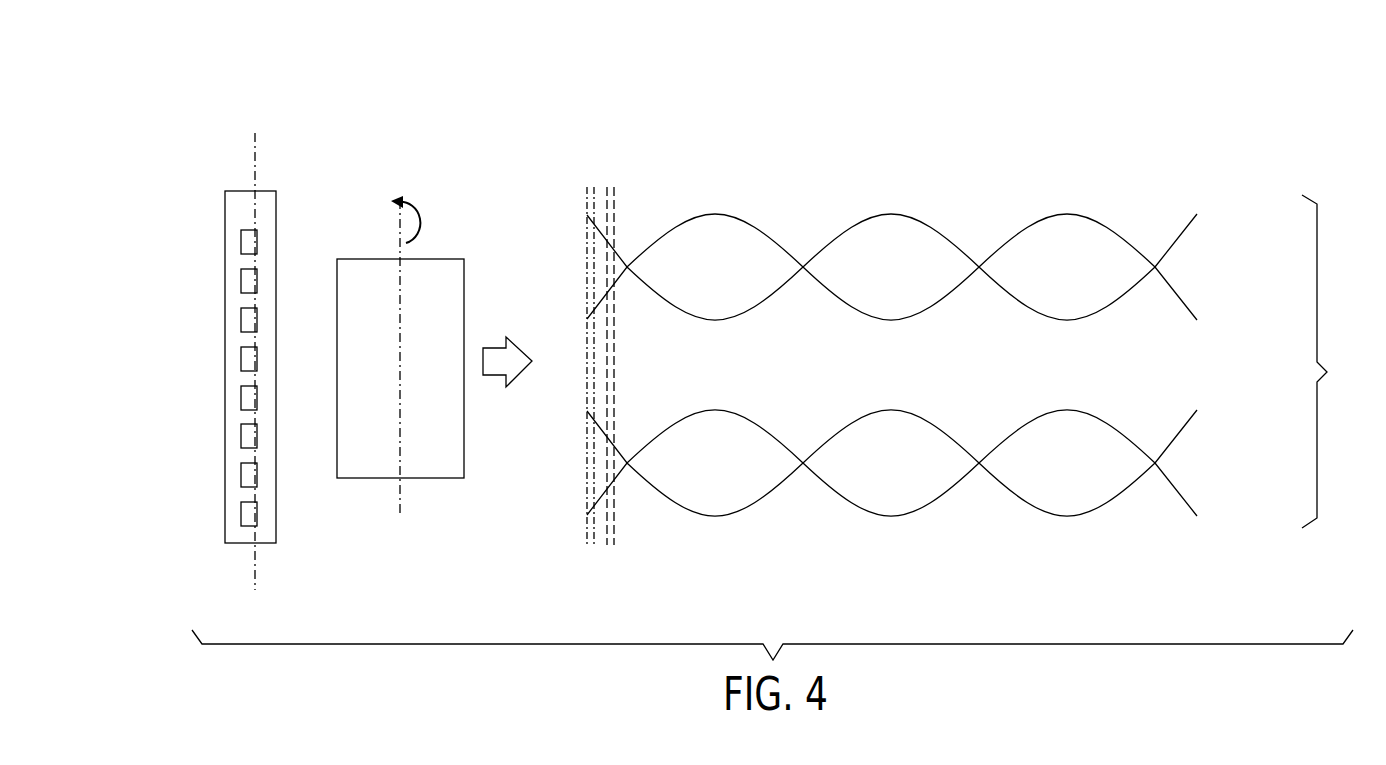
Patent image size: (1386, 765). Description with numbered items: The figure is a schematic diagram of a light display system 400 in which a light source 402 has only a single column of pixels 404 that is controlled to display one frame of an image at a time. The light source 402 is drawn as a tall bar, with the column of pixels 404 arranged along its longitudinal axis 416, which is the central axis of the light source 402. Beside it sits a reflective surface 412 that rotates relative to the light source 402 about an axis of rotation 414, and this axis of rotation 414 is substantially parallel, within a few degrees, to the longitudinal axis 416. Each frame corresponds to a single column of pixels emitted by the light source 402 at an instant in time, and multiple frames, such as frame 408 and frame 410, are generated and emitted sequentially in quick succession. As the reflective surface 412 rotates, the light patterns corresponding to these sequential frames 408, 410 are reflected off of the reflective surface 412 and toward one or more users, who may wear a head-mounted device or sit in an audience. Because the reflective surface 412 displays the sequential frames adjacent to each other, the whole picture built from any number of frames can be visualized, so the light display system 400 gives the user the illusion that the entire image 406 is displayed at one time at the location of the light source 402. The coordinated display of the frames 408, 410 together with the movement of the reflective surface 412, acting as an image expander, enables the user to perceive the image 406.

The light display system 400 is at (479, 68).
The light source 402 is at (237, 191).
The single column of pixels 404 is at (242, 437).
The image 406 is at (981, 361).
The frame 408 is at (613, 215).
The frame 410 is at (590, 187).
The reflective surface 412 is at (380, 478).
The axis of rotation 414 is at (402, 496).
The longitudinal axis 416 is at (257, 572).